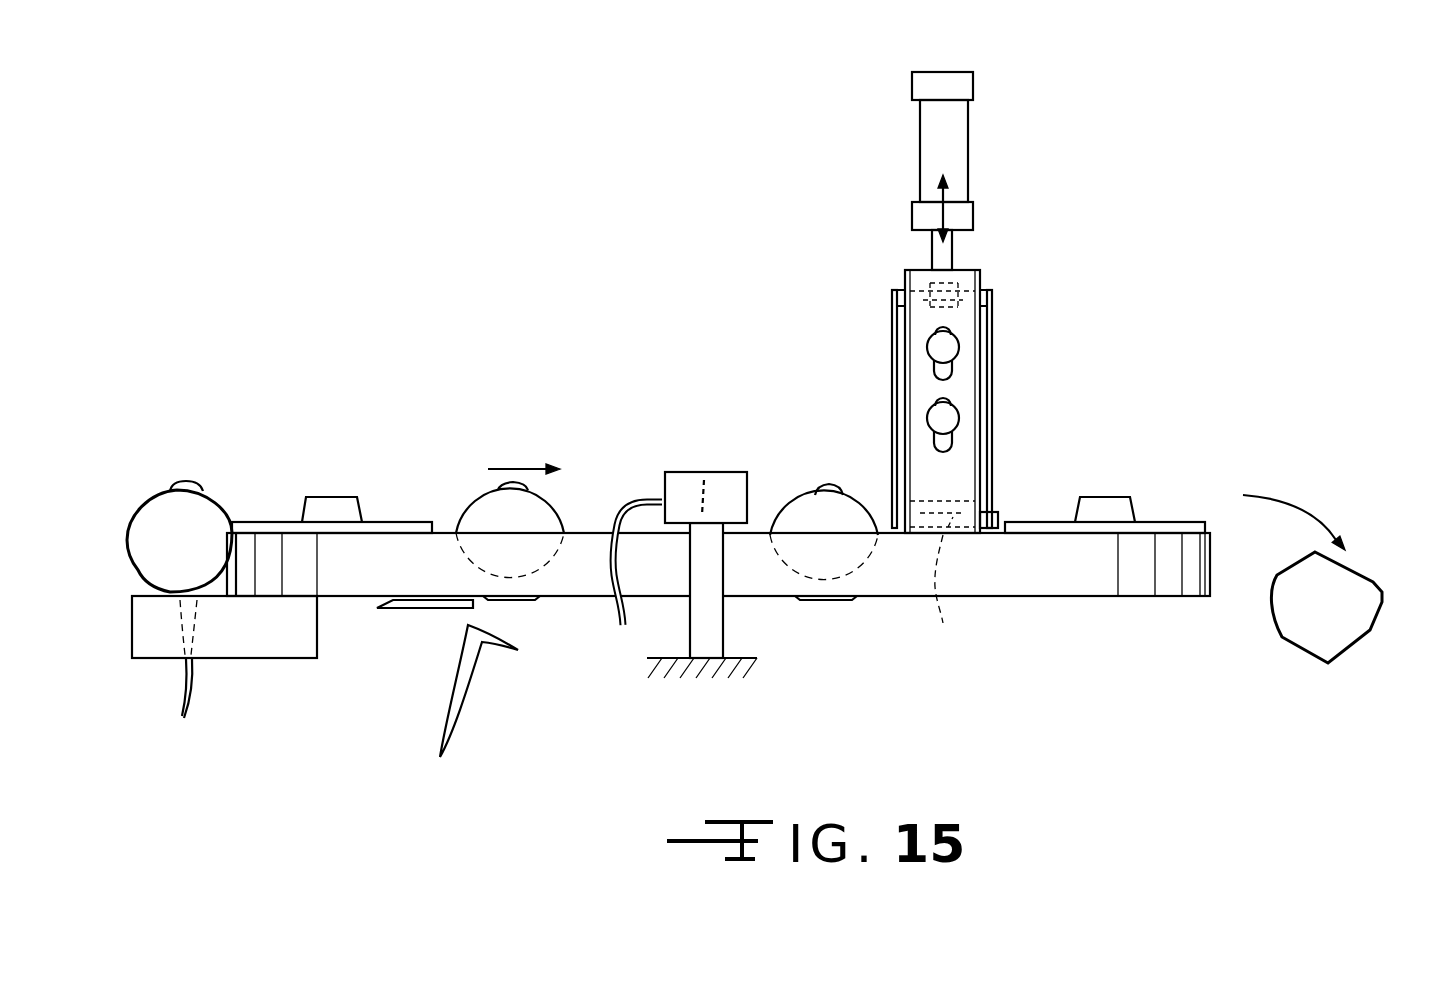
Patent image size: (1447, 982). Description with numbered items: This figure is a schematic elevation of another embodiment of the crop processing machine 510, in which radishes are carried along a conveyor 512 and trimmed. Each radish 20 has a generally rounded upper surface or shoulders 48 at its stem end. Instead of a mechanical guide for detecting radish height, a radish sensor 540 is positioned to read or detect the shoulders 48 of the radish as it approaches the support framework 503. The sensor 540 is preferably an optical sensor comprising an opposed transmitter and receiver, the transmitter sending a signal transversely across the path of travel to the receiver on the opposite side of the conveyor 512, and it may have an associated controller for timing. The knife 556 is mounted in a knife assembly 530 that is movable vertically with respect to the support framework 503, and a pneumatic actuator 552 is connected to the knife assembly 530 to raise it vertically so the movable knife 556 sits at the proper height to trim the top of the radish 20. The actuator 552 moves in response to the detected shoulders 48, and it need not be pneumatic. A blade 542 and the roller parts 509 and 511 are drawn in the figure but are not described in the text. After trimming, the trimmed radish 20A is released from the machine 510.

The radish 20 is at (173, 500).
The shoulders 48 is at (128, 517).
The trimmed radish 20A is at (1370, 636).
The crop processing machine 510 is at (604, 424).
The conveyor 512 is at (1077, 597).
The radish sensor 540 is at (690, 472).
The blade 542 is at (430, 610).
The knife assembly 530 is at (966, 420).
The support framework 503 is at (920, 270).
The roller 509 is at (960, 348).
The roller shaft 511 is at (947, 368).
The pneumatic actuator 552 is at (963, 140).
The knife 556 is at (946, 593).